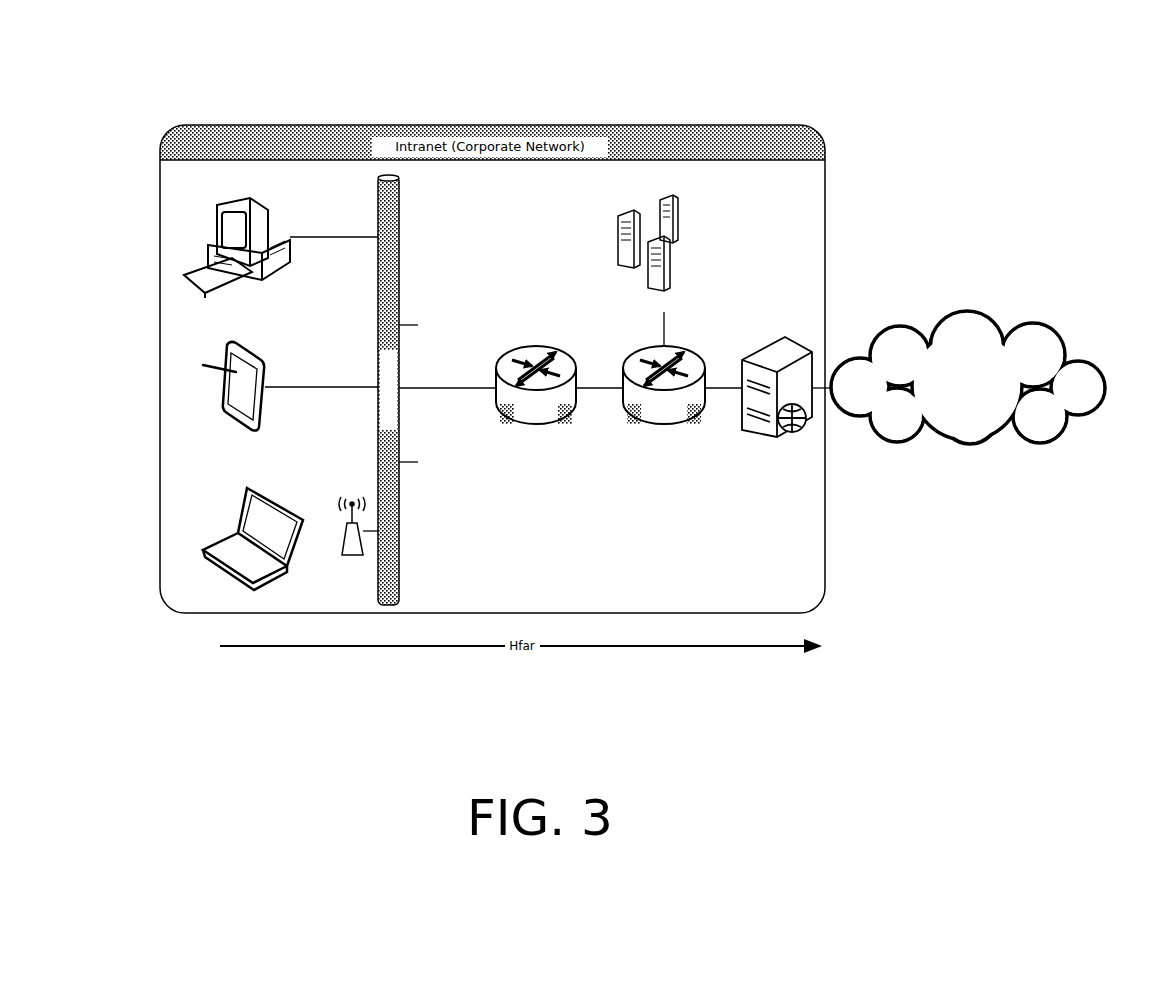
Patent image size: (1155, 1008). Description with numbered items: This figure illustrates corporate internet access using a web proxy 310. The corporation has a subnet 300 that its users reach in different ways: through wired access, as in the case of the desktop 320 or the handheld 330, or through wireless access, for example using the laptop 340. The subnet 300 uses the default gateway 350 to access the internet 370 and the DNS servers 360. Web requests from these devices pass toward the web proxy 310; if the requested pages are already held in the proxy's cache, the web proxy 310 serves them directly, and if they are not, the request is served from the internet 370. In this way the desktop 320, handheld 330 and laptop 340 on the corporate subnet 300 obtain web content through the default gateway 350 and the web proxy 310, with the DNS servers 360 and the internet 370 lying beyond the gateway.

The subnet 300 is at (381, 177).
The web proxy 310 is at (800, 337).
The desktop 320 is at (205, 235).
The handheld 330 is at (212, 353).
The laptop 340 is at (222, 530).
The default gateway 350 is at (568, 415).
The DNS servers 360 is at (683, 205).
The internet 370 is at (997, 437).